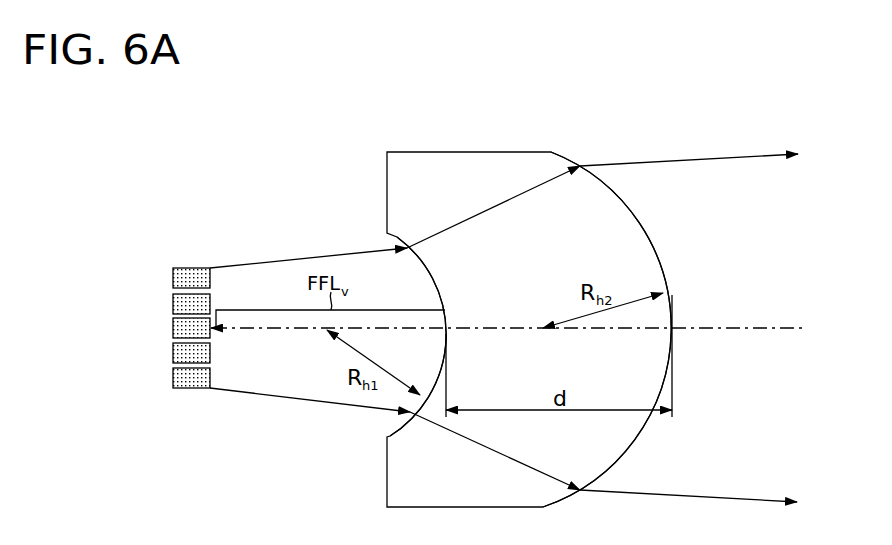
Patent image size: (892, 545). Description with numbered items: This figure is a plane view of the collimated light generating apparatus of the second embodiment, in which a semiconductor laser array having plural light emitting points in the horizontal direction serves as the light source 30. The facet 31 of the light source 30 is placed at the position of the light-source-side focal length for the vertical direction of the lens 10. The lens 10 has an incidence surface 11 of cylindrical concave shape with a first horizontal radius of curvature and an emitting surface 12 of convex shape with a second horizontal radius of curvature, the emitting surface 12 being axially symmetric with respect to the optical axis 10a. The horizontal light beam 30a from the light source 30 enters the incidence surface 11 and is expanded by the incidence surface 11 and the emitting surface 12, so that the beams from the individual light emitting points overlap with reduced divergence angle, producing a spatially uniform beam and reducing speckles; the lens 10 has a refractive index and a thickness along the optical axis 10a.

The lens 10 is at (477, 152).
The optical axis 10a is at (534, 328).
The incidence surface 11 is at (433, 277).
The emitting surface 12 is at (648, 223).
The light source 30 is at (193, 268).
The horizontal light beam 30a is at (275, 262).
The facet 31 is at (210, 378).